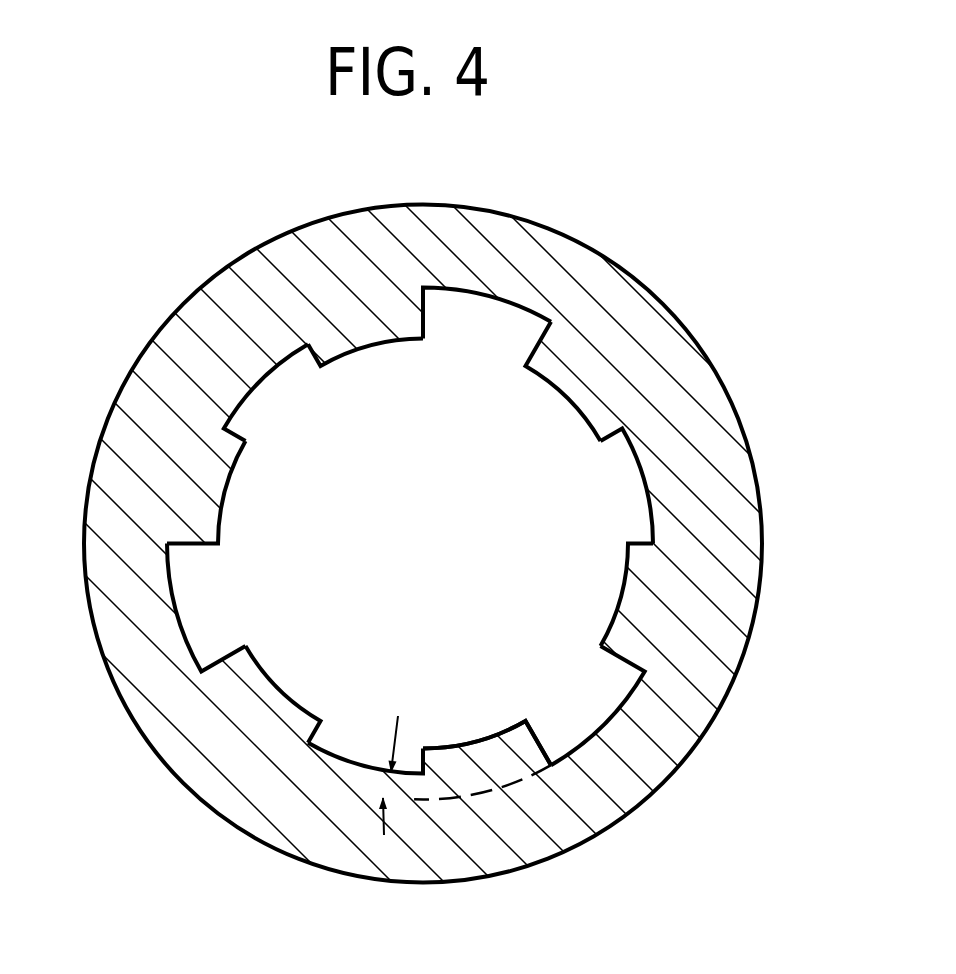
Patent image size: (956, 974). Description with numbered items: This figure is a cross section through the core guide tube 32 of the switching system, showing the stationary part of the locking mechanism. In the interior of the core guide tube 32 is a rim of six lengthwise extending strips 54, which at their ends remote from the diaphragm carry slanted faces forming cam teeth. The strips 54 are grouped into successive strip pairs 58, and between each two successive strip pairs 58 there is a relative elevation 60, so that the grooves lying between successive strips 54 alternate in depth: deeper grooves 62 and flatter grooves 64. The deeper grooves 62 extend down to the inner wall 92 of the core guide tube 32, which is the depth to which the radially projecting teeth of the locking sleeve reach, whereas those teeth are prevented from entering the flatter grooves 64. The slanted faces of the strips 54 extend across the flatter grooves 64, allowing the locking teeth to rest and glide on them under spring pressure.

The core guide tube 32 is at (683, 357).
The lengthwise extending strips 54 is at (567, 381).
The strip pairs 58 is at (632, 584).
The relative elevation 60 is at (389, 800).
The deeper grooves 62 is at (484, 297).
The flatter grooves 64 is at (645, 502).
The inner wall 92 is at (607, 722).